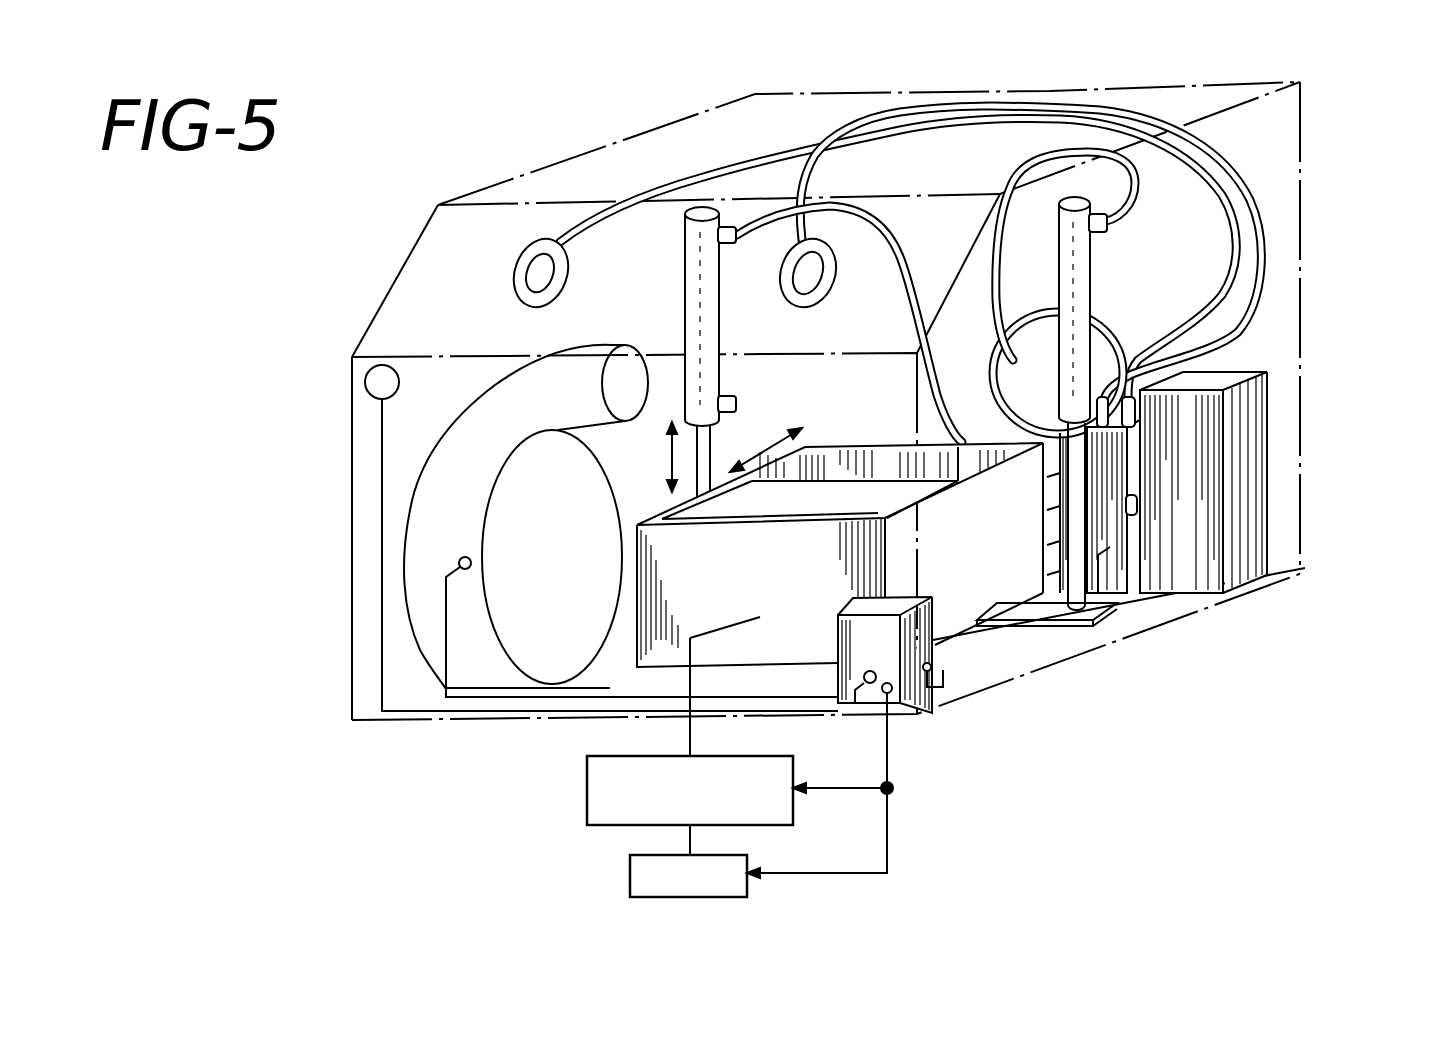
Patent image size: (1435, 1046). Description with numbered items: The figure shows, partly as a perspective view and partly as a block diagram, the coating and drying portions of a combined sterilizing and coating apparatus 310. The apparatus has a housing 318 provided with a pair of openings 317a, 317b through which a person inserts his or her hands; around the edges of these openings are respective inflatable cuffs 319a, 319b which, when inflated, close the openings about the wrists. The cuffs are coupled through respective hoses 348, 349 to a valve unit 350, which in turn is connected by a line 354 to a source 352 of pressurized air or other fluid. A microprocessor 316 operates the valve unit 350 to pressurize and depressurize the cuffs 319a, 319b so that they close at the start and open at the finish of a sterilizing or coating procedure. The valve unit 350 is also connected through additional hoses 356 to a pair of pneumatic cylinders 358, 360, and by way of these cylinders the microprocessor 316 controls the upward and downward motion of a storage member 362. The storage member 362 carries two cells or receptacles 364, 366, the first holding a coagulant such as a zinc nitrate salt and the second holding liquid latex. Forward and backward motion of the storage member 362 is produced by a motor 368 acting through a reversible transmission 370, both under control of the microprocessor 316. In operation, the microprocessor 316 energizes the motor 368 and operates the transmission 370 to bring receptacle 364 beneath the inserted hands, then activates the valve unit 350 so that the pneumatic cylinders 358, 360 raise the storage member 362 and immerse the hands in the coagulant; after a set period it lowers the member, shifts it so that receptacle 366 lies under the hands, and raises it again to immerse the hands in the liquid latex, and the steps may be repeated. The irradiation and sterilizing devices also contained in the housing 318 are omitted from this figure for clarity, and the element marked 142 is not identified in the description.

The sterilizing and coating apparatus 310 is at (260, 666).
The indicator lamp 142 is at (366, 383).
The microprocessor 316 is at (930, 690).
The opening 317a is at (525, 268).
The opening 317b is at (797, 273).
The housing 318 is at (572, 160).
The inflatable cuff 319a is at (515, 298).
The inflatable cuff 319b is at (828, 260).
The hose 348 is at (712, 168).
The hose 349 is at (1250, 196).
The valve unit 350 is at (1133, 450).
The source of pressurized air 352 is at (1247, 543).
The line 354 is at (1137, 507).
The hoses 356 is at (1005, 385).
The pneumatic cylinder 358 is at (695, 285).
The pneumatic cylinder 360 is at (1085, 267).
The storage member 362 is at (630, 665).
The receptacle 364 is at (687, 507).
The receptacle 366 is at (878, 460).
The motor 368 is at (630, 862).
The reversible transmission 370 is at (587, 780).